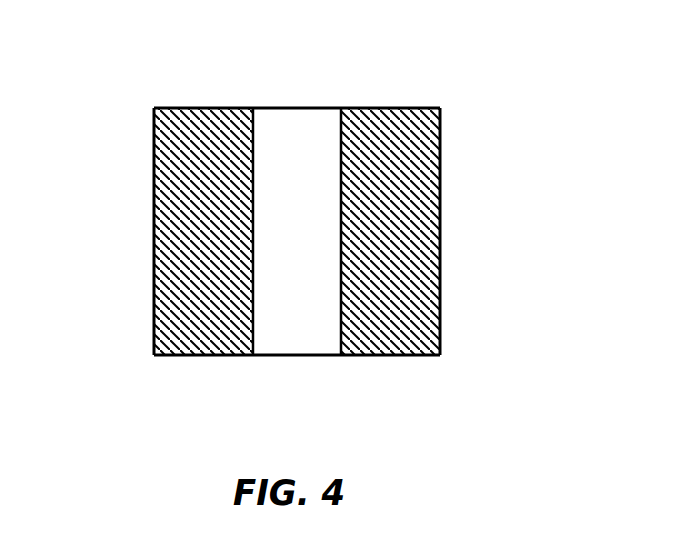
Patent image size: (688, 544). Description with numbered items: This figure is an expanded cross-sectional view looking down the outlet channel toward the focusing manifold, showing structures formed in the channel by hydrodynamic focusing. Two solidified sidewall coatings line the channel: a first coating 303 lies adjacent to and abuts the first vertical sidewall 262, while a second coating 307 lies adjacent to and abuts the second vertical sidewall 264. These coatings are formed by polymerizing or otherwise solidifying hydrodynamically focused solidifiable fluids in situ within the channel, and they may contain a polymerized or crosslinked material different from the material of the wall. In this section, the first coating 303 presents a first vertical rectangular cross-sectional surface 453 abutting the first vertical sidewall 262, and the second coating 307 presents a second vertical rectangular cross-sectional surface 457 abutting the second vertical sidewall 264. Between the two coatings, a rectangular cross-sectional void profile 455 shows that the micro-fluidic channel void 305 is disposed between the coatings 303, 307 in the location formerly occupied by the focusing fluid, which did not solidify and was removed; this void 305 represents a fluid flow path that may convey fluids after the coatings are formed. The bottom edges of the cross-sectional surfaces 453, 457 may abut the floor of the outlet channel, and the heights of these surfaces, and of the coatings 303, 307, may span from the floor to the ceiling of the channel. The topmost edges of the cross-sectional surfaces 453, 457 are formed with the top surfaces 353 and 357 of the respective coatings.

The first coating 303 is at (462, 308).
The top surface 357 is at (193, 98).
The second vertical rectangular cross-sectional surface 457 is at (201, 192).
The top surface 353 is at (405, 98).
The first vertical rectangular cross-sectional surface 453 is at (399, 192).
The rectangular cross-sectional void profile 455 is at (320, 243).
The micro-fluidic channel void 305 is at (316, 300).
The second coating 307 is at (272, 315).
The second vertical sidewall 264 is at (153, 213).
The first vertical sidewall 262 is at (440, 219).